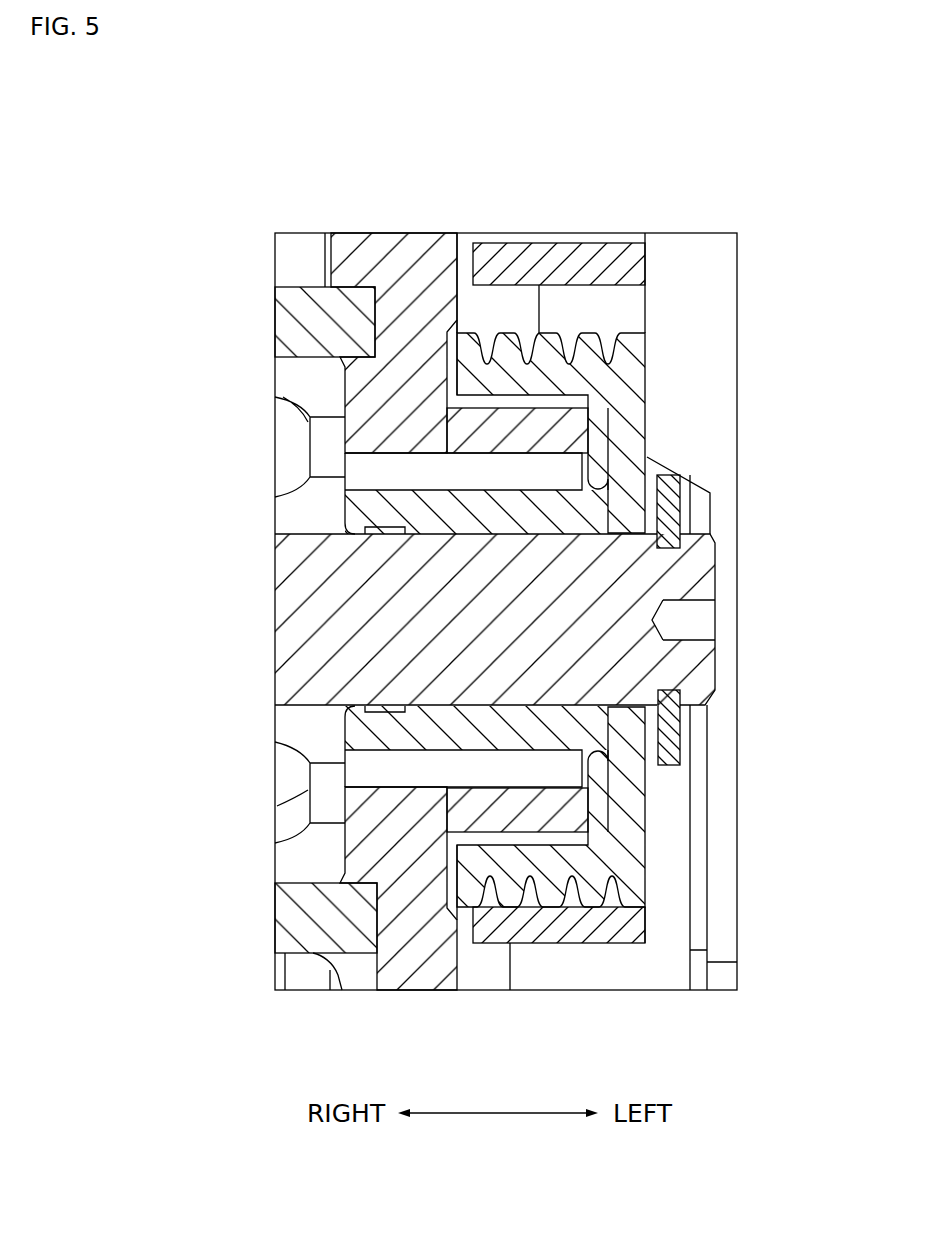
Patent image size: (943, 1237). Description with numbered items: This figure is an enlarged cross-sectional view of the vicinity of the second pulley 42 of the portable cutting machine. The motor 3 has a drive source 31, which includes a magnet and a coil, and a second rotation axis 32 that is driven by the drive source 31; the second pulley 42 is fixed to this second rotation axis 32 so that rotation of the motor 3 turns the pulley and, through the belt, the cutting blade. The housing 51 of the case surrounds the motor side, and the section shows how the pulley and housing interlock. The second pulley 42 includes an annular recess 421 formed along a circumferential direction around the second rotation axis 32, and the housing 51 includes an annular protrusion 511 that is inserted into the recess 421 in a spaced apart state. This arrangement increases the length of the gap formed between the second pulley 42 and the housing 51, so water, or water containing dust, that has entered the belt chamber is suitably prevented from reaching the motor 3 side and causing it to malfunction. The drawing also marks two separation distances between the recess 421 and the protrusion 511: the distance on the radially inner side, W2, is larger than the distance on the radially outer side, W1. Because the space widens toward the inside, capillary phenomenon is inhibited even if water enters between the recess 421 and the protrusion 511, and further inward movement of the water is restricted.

The motor 3 is at (234, 546).
The drive source 31 is at (290, 862).
The second rotation axis 32 is at (297, 627).
The second pulley 42 is at (637, 418).
The annular recess 421 is at (603, 409).
The housing 51 is at (405, 257).
The annular protrusion 511 is at (503, 430).
The separation distance on the outside W1 is at (547, 763).
The separation distance on the inside W2 is at (495, 690).